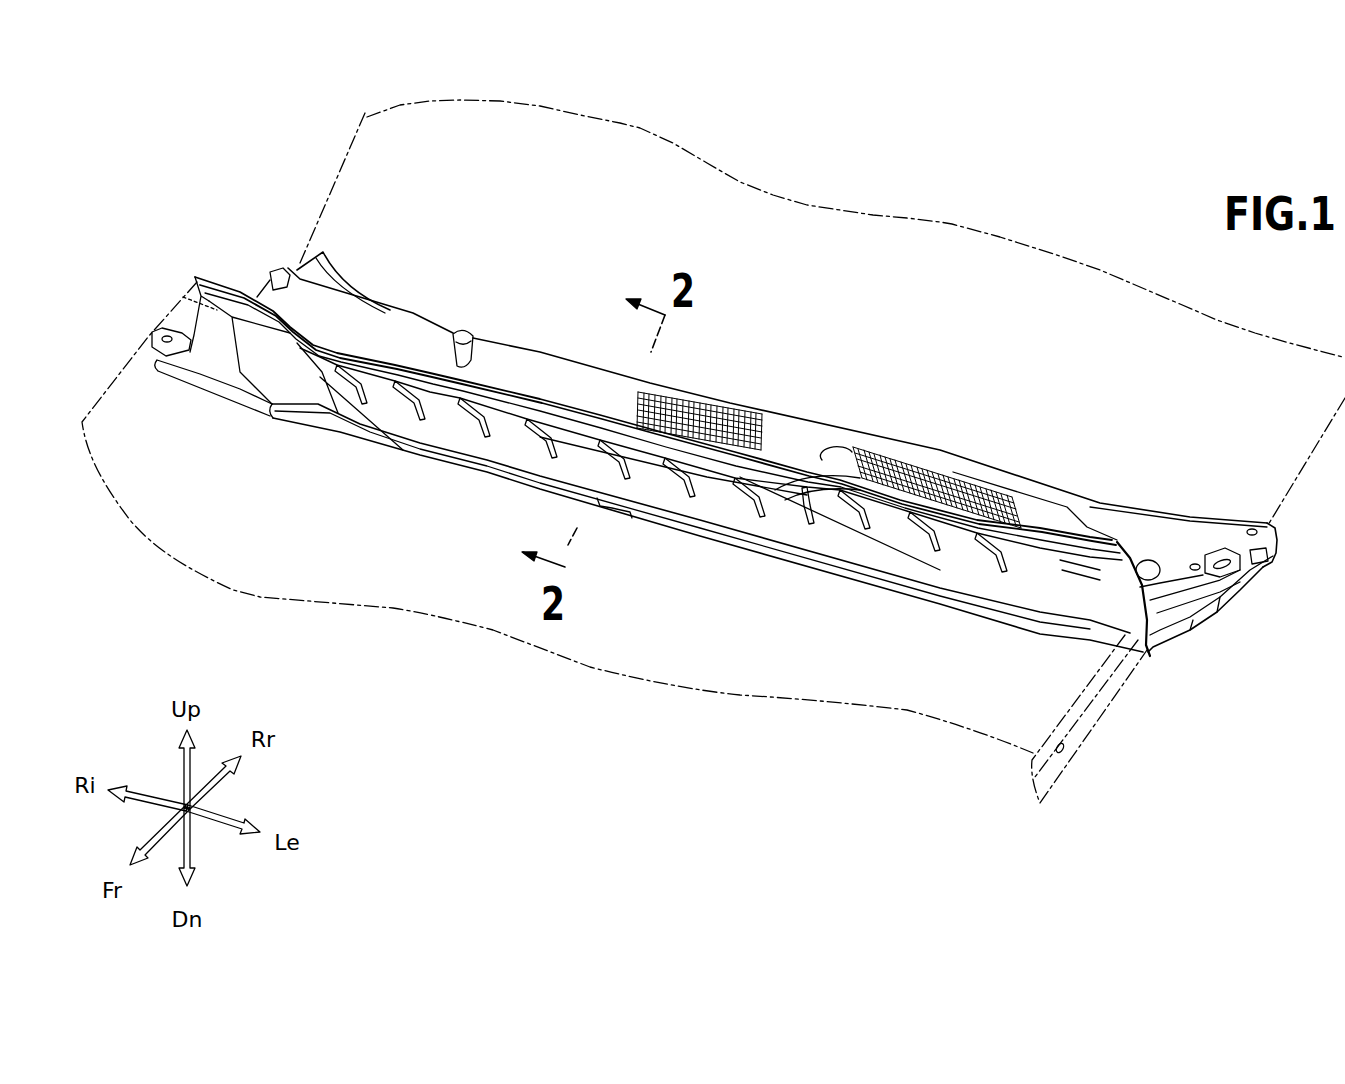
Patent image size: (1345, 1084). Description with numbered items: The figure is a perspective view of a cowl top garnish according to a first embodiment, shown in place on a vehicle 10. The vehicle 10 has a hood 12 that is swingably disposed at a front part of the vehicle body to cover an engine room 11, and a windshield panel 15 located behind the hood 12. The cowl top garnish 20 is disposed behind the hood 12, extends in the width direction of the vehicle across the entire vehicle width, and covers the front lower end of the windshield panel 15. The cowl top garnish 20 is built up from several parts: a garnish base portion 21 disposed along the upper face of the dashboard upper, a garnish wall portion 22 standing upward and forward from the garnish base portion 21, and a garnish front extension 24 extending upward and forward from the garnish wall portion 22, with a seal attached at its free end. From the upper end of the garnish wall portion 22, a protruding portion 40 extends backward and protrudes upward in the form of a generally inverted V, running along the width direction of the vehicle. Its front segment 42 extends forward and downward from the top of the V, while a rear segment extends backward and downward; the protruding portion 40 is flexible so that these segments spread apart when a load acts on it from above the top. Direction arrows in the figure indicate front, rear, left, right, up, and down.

The vehicle 10 is at (1103, 172).
The engine room 11 is at (564, 751).
The hood 12 is at (966, 728).
The windshield panel 15 is at (953, 222).
The cowl top garnish 20 is at (535, 300).
The garnish base portion 21 is at (762, 567).
The garnish wall portion 22 is at (729, 513).
The garnish front extension 24 is at (817, 493).
The protruding portion 40 is at (1113, 521).
The front segment 42 is at (553, 371).